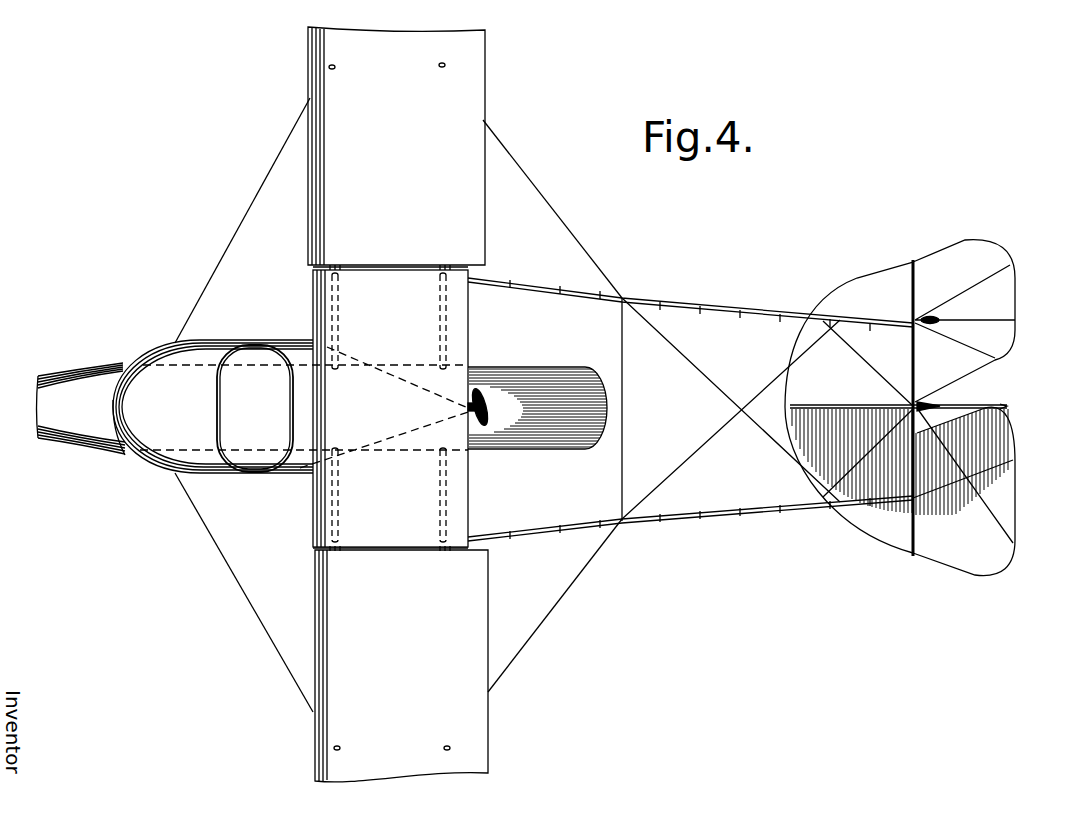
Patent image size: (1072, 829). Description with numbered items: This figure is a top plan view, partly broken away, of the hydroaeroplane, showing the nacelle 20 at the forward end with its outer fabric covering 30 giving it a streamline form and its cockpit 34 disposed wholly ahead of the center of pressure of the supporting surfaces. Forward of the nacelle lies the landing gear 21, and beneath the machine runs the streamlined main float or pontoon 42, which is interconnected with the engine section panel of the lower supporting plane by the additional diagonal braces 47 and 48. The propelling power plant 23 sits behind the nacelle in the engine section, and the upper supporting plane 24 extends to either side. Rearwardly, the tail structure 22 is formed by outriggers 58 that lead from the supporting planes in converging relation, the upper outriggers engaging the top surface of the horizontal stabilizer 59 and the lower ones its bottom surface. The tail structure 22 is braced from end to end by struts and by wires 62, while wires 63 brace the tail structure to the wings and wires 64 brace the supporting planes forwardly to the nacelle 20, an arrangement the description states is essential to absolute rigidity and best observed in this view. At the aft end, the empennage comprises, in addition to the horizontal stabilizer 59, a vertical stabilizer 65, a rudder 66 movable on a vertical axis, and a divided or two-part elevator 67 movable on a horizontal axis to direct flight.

The nacelle 20 is at (219, 345).
The landing gear 21 is at (87, 385).
The tail structure 22 is at (693, 306).
The propelling power plant 23 is at (490, 392).
The upper supporting plane 24 is at (396, 146).
The outer fabric covering 30 is at (116, 452).
The cockpit 34 is at (216, 408).
The main float or pontoon 42 is at (498, 453).
The diagonal brace 47 is at (337, 503).
The diagonal brace 48 is at (441, 503).
The outrigger 58 is at (538, 287).
The horizontal stabilizer 59 is at (858, 282).
The wires 62 is at (745, 391).
The wires 63 is at (562, 219).
The wires 64 is at (228, 565).
The vertical stabilizer 65 is at (835, 406).
The rudder 66 is at (1002, 408).
The divided or two-part elevator 67 is at (1003, 470).